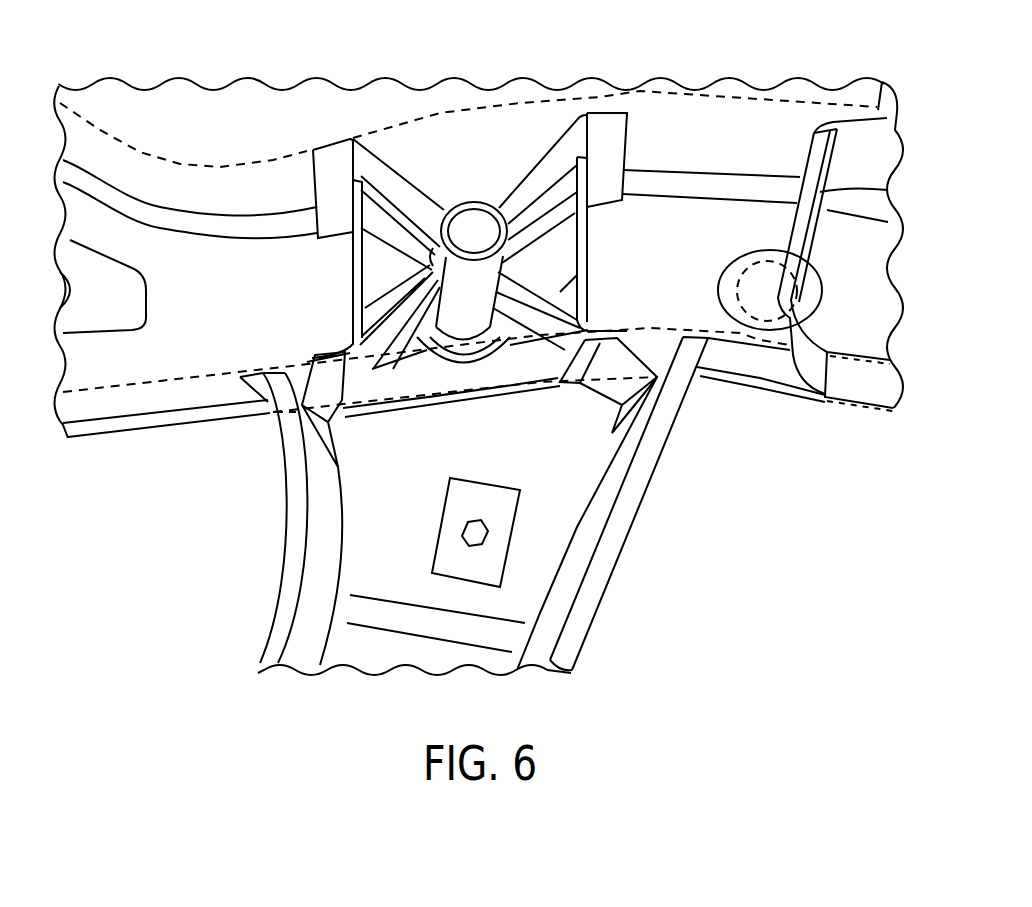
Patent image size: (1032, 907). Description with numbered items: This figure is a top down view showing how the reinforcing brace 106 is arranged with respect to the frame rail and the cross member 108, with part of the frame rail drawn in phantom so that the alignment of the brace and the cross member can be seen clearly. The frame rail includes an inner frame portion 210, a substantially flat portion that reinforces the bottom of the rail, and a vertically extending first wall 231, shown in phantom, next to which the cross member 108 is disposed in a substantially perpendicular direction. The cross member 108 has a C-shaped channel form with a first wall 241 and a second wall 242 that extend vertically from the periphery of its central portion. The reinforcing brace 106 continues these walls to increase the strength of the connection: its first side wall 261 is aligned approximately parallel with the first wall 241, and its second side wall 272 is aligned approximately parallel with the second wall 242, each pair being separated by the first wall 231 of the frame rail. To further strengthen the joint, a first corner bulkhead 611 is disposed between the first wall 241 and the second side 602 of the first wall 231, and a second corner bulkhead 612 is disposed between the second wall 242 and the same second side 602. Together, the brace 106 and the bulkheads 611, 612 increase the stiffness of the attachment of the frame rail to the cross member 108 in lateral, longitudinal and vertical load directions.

The reinforcing brace 106 is at (530, 158).
The cross member 108 is at (349, 681).
The inner frame portion 210 is at (741, 215).
The first wall 231 is at (106, 425).
The first wall 241 is at (266, 587).
The second wall 242 is at (648, 507).
The first side wall 261 is at (346, 276).
The second side wall 272 is at (598, 244).
The second side 602 is at (205, 418).
The first corner bulkhead 611 is at (331, 413).
The second corner bulkhead 612 is at (615, 388).